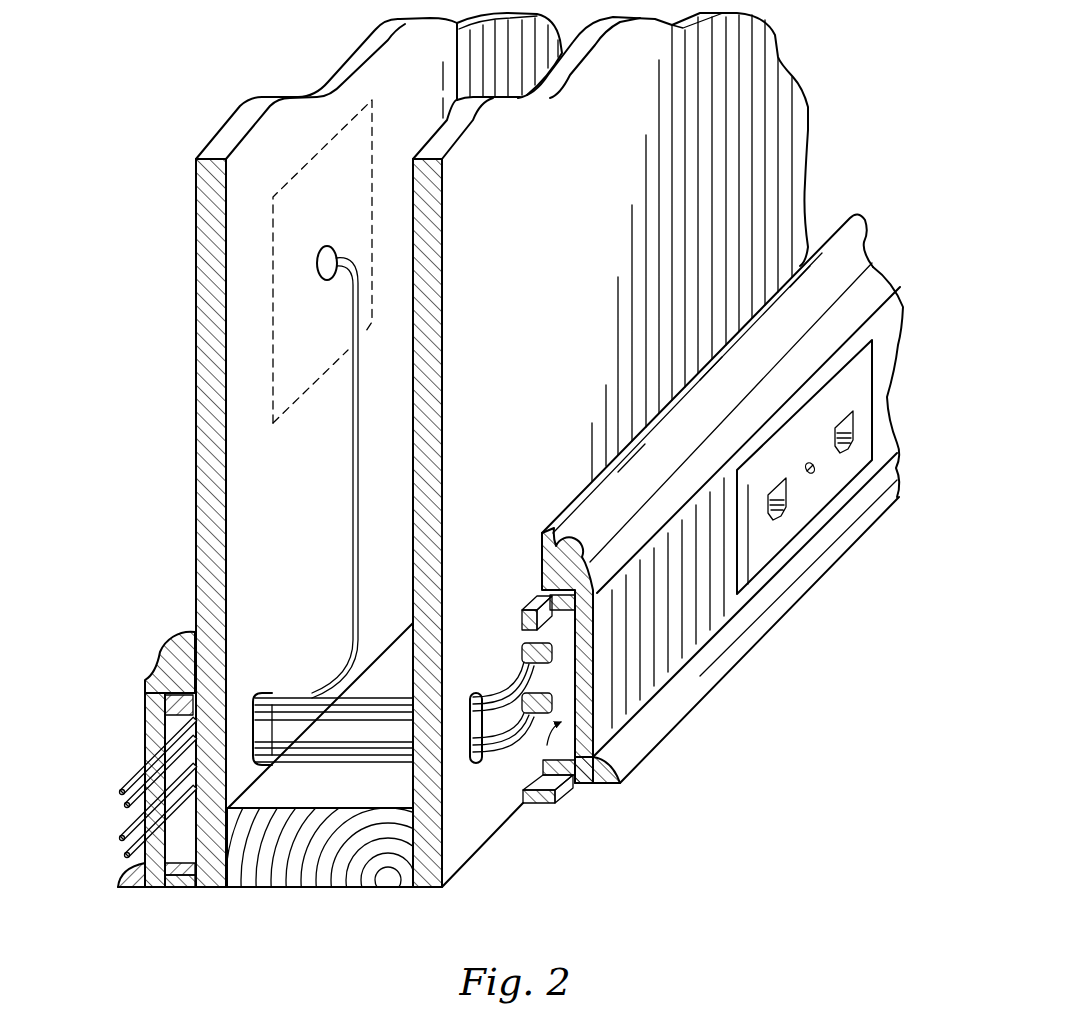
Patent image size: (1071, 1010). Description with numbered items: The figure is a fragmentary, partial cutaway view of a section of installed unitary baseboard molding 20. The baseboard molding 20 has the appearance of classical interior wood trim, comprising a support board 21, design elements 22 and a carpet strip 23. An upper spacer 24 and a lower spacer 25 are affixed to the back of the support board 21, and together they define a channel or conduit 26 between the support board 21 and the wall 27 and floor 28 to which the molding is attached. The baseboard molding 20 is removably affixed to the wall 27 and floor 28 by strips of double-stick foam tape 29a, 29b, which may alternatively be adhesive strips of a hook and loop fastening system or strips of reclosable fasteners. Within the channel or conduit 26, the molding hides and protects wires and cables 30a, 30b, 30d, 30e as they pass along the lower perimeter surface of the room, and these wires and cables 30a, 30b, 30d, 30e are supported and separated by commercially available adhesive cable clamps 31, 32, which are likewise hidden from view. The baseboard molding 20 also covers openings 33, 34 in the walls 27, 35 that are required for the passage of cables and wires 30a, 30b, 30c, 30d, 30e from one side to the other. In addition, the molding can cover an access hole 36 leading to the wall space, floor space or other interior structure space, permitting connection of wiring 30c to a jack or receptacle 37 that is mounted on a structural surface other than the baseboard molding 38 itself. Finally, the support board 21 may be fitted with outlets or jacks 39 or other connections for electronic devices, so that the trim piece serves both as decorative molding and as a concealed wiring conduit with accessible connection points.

The unitary baseboard molding 20 is at (889, 202).
The support board 21 is at (887, 365).
The design elements 22 is at (870, 244).
The carpet strip 23 is at (898, 474).
The upper spacer 24 is at (532, 606).
The lower spacer 25 is at (562, 803).
The channel or conduit 26 is at (594, 755).
The wall 27 is at (812, 110).
The floor 28 is at (848, 718).
The strip of double-stick foam tape 29a is at (537, 600).
The strip of double-stick foam tape 29b is at (545, 812).
The wire or cable 30a is at (363, 697).
The wire or cable 30b is at (362, 715).
The wiring 30c is at (358, 645).
The wire or cable 30d is at (290, 745).
The wire or cable 30e is at (397, 762).
The adhesive cable clamp 31 is at (525, 652).
The adhesive cable clamp 32 is at (527, 695).
The opening 33 is at (466, 763).
The opening 34 is at (264, 692).
The wall 35 is at (222, 132).
The access hole 36 is at (318, 247).
The jack or receptacle 37 is at (300, 397).
The baseboard molding 38 is at (116, 650).
The outlets or jacks 39 is at (820, 513).